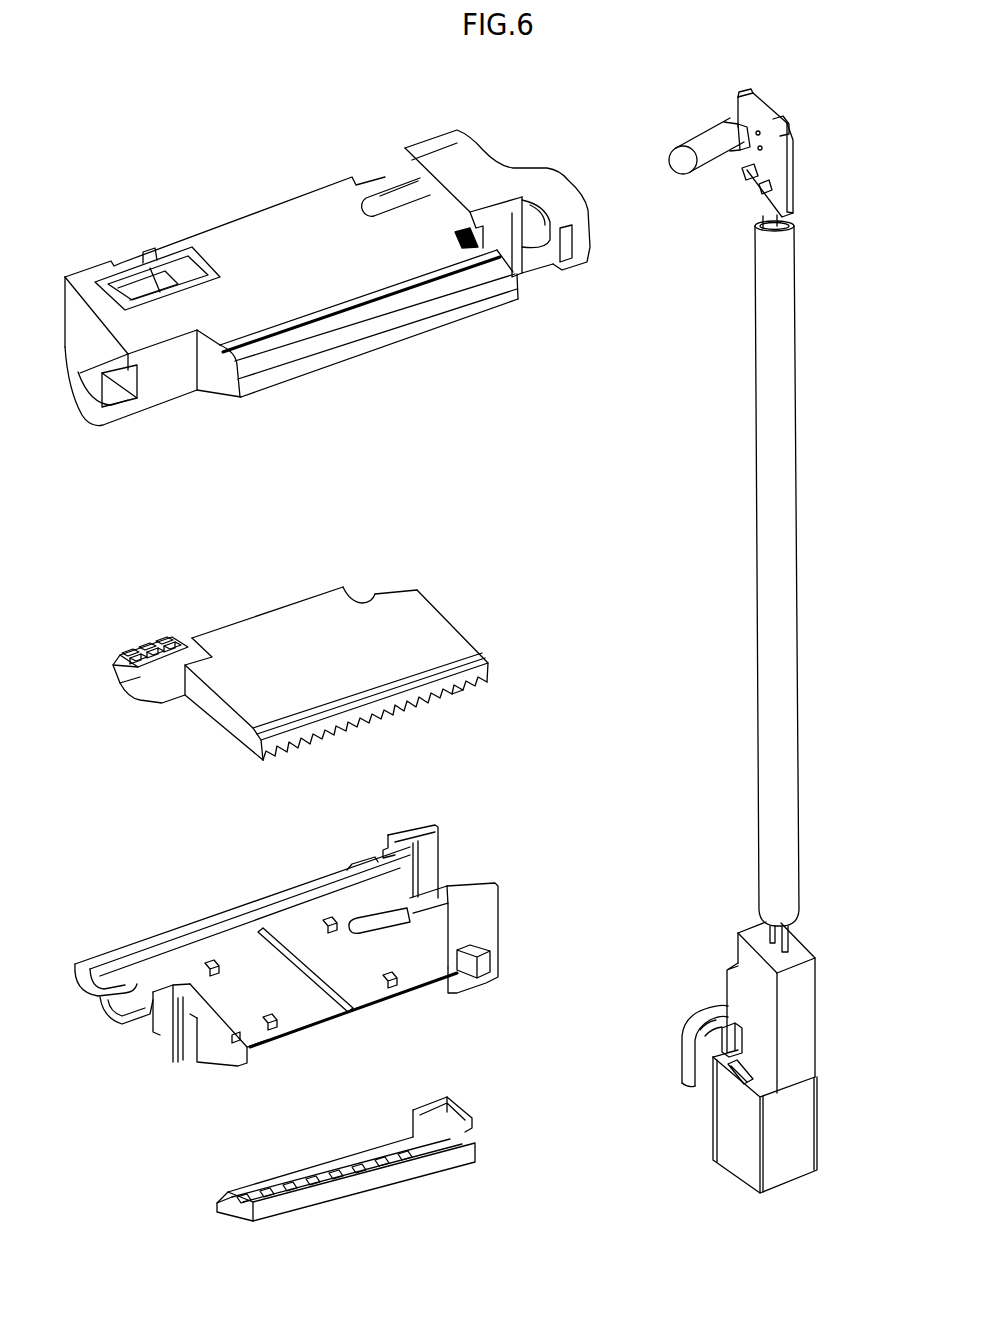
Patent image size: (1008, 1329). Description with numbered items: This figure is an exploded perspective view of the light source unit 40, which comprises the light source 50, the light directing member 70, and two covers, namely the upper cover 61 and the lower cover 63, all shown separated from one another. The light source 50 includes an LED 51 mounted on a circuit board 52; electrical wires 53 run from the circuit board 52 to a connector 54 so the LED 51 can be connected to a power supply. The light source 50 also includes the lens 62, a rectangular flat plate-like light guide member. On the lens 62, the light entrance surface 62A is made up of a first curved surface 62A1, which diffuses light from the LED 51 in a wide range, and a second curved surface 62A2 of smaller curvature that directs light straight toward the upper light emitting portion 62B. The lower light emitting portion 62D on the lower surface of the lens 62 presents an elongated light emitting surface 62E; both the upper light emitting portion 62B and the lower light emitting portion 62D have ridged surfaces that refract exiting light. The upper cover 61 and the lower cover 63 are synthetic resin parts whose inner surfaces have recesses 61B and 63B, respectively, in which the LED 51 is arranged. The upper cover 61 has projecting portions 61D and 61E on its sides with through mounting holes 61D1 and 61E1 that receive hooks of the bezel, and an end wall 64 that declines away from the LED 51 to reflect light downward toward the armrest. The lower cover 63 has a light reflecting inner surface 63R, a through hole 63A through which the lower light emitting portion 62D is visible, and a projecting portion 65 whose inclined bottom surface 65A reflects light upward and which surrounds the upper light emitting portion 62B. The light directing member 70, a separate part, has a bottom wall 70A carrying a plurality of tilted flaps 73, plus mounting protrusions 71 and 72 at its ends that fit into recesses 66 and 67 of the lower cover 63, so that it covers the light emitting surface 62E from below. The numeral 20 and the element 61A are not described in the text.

The upper cover 61 is at (345, 283).
The window of cover 61A is at (173, 268).
The recess 61B is at (407, 192).
The projecting portion 61D is at (105, 377).
The mounting hole 61D1 is at (123, 400).
The projecting portion 61E is at (522, 239).
The mounting hole 61E1 is at (540, 237).
The end wall 64 is at (350, 318).
The lens 62 is at (376, 628).
The light entrance surface 62A is at (385, 545).
The first curved surface 62A1 is at (368, 596).
The second curved surface 62A2 is at (345, 587).
The upper light emitting portion 62B is at (150, 642).
The lower light emitting portion 62D is at (462, 687).
The light emitting surface 62E is at (367, 723).
The light source 50 is at (473, 507).
The LED 51 is at (710, 142).
The circuit board 52 is at (778, 166).
The electrical wires 53 is at (793, 295).
The connector 54 is at (805, 1007).
The light source unit 40 is at (709, 1175).
The base unit 20 is at (767, 1079).
The lower cover 63 is at (333, 957).
The through hole 63A is at (267, 1042).
The recess 63B is at (385, 916).
The inner surface 63R is at (195, 980).
The projecting portion 65 is at (83, 964).
The bottom surface 65A is at (113, 983).
The recess 66 is at (234, 1035).
The recess 67 is at (452, 972).
The light directing member 70 is at (382, 1139).
The bottom wall 70A is at (343, 1160).
The mounting protrusion 71 is at (248, 1200).
The mounting protrusion 72 is at (468, 1113).
The tilted flaps 73 is at (313, 1172).